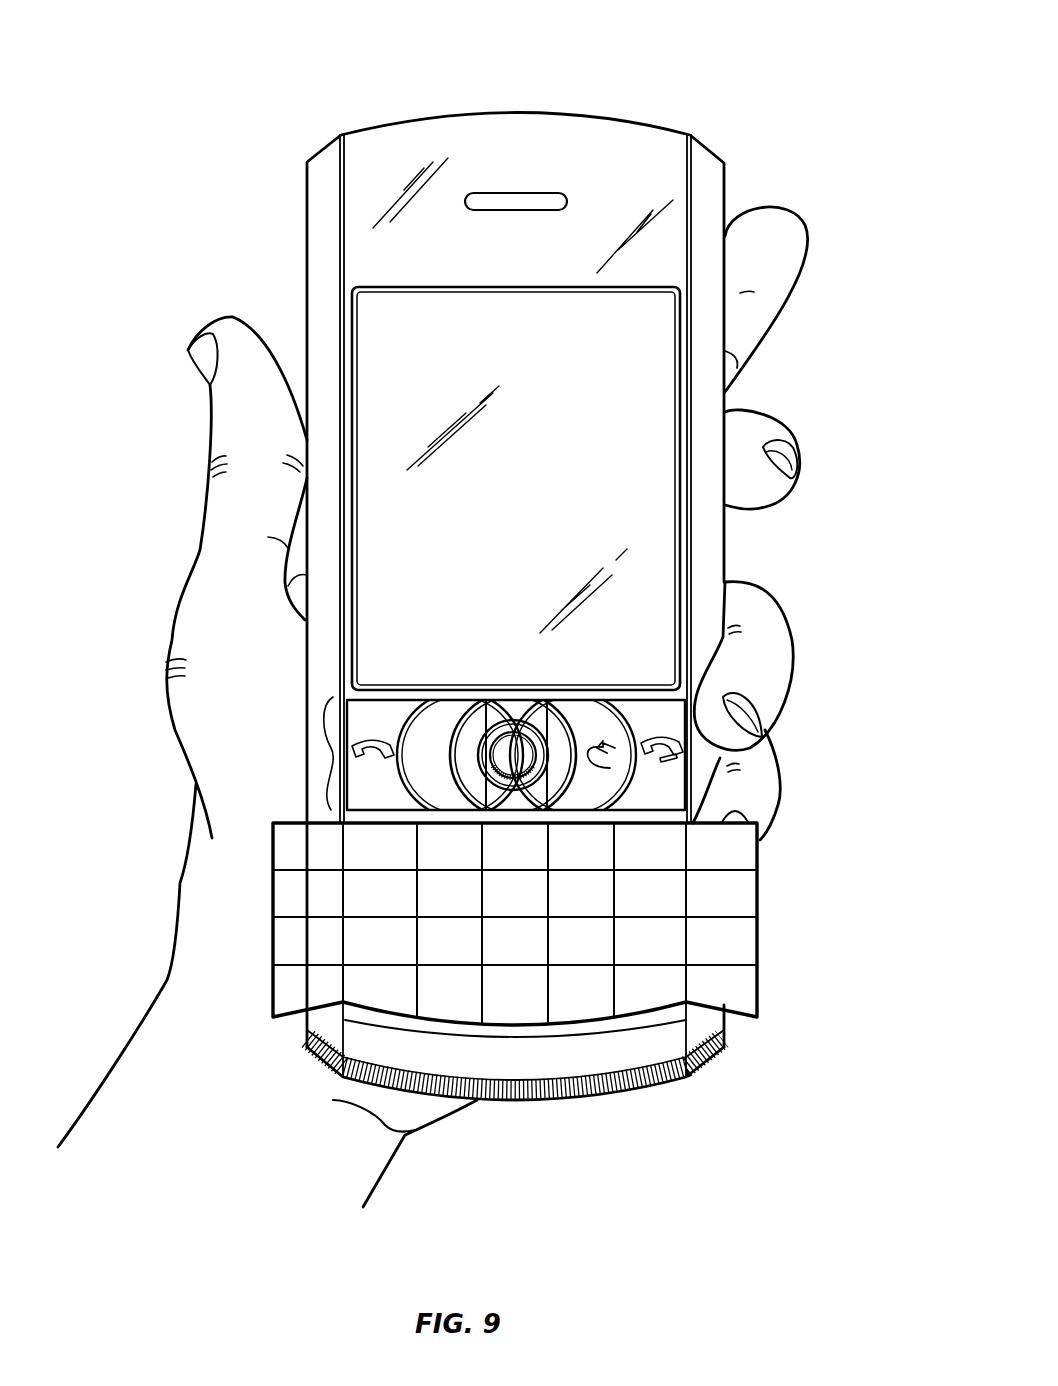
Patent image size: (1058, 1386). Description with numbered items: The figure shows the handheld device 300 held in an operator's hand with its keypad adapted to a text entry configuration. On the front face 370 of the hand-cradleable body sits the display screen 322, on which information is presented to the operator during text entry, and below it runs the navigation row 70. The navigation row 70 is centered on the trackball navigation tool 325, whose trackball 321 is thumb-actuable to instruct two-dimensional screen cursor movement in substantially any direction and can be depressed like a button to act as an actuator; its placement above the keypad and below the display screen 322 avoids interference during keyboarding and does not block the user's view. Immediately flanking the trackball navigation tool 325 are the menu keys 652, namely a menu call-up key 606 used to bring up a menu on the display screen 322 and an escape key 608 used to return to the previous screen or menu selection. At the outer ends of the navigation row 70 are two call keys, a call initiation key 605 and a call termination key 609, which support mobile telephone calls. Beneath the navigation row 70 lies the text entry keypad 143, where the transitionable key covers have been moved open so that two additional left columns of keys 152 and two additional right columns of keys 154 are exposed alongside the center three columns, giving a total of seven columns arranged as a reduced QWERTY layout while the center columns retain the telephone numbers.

The handheld device 300 is at (672, 43).
The front face 370 is at (709, 193).
The display screen 322 is at (652, 455).
The menu keys 652 is at (450, 708).
The navigation row 70 is at (314, 752).
The call initiation key 605 is at (377, 798).
The menu call-up key 606 is at (428, 775).
The escape key 608 is at (610, 773).
The call termination key 609 is at (658, 775).
The trackball navigation tool 325 is at (557, 748).
The trackball 321 is at (514, 750).
The additional left columns of keys 152 is at (273, 942).
The additional right columns of keys 154 is at (760, 947).
The keyboard 143 is at (519, 1035).